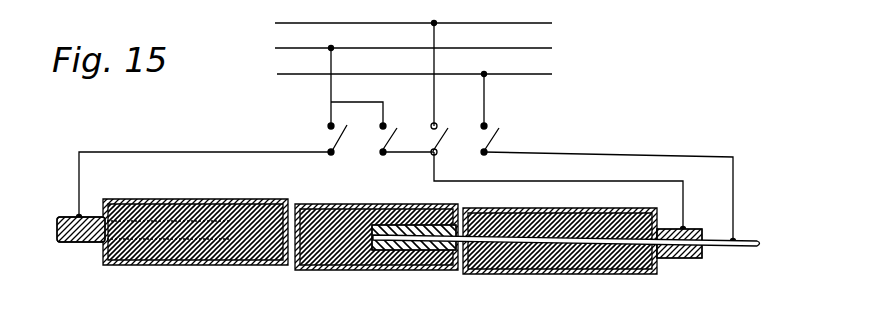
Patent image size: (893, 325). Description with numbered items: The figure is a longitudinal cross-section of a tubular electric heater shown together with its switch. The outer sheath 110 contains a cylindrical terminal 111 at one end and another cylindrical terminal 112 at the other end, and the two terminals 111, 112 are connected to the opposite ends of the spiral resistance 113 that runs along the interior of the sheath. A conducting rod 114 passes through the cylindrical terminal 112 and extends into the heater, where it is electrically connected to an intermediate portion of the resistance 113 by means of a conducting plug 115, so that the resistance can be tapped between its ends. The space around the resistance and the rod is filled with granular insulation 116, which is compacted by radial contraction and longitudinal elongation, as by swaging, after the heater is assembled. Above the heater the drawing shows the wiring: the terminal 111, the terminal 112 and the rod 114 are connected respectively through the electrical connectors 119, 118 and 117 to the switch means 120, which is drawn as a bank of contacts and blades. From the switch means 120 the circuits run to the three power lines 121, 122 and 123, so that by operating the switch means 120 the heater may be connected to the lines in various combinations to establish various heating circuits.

The sheath 110 is at (352, 265).
The cylindrical terminal 111 is at (67, 217).
The cylindrical terminal 112 is at (676, 258).
The spiral resistance 113 is at (243, 240).
The conducting rod 114 is at (748, 243).
The conducting plug 115 is at (403, 250).
The granular insulation 116 is at (243, 240).
The electrical connector 117 is at (560, 157).
The electrical connector 118 is at (553, 181).
The electrical connector 119 is at (168, 152).
The switch means 120 is at (430, 150).
The power line 121 is at (552, 23).
The power line 122 is at (552, 48).
The power line 123 is at (552, 74).